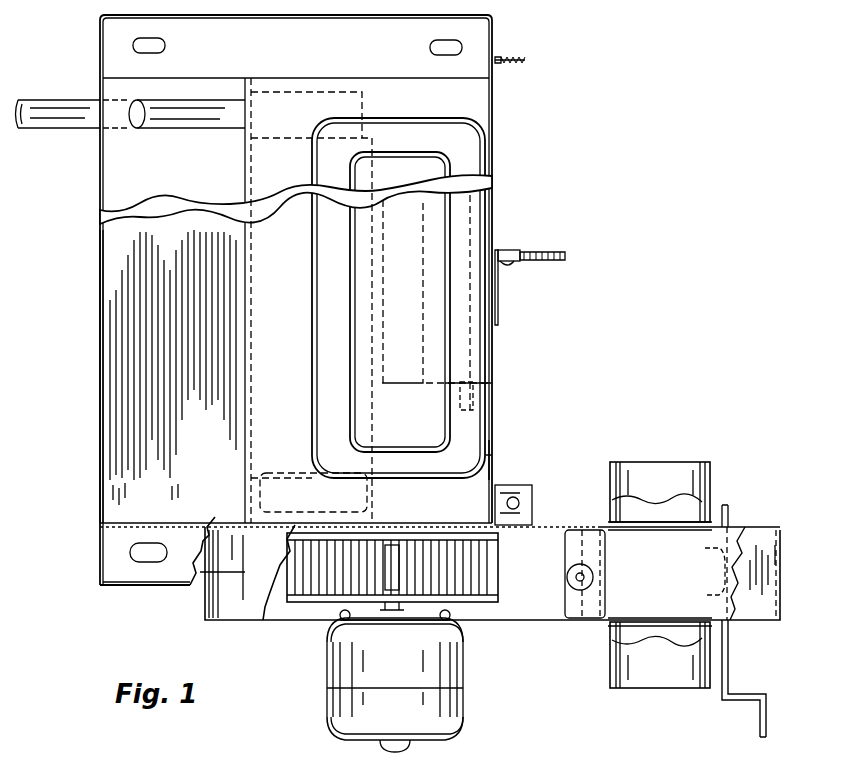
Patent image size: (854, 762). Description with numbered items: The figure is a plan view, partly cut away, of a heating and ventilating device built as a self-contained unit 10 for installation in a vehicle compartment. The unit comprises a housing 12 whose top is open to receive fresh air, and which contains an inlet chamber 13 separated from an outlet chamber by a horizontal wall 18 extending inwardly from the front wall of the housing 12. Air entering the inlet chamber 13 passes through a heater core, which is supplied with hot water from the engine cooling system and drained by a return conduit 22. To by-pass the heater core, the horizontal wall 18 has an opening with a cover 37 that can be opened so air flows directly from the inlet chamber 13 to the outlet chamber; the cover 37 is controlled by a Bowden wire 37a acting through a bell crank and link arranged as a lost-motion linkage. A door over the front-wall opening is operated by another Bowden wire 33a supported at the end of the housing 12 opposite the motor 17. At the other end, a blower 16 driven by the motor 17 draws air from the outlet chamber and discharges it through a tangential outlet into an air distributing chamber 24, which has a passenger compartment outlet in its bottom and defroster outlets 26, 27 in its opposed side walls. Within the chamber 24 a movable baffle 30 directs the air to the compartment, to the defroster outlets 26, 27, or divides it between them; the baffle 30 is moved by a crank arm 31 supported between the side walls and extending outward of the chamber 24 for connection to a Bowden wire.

The self-contained unit 10 is at (495, 373).
The housing 12 is at (100, 290).
The inlet chamber 13 is at (133, 455).
The horizontal wall 18 is at (245, 430).
The Bowden wire 33a is at (516, 58).
The Bowden wire 37a is at (562, 245).
The cover 37 is at (492, 466).
The return conduit 22 is at (556, 530).
The blower 16 is at (500, 548).
The motor 17 is at (463, 706).
The movable baffle 30 is at (604, 618).
The defroster outlet 27 is at (710, 475).
The defroster outlet 26 is at (611, 668).
The air distributing chamber 24 is at (757, 527).
The crank arm 31 is at (728, 665).